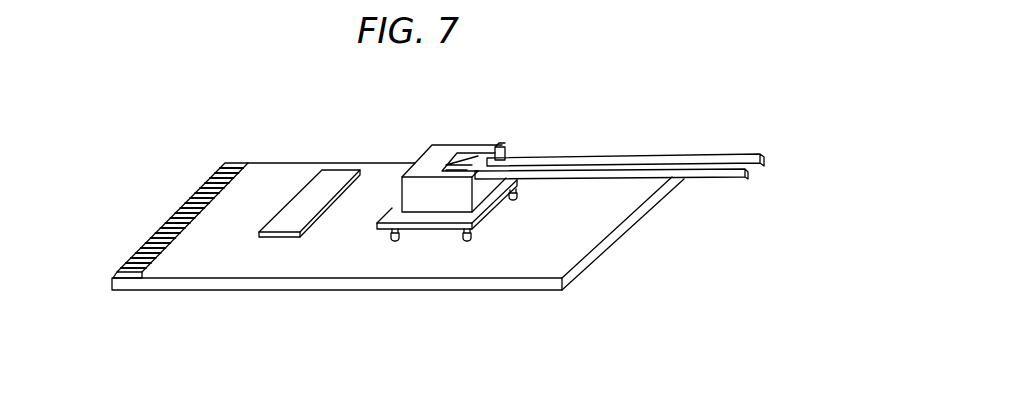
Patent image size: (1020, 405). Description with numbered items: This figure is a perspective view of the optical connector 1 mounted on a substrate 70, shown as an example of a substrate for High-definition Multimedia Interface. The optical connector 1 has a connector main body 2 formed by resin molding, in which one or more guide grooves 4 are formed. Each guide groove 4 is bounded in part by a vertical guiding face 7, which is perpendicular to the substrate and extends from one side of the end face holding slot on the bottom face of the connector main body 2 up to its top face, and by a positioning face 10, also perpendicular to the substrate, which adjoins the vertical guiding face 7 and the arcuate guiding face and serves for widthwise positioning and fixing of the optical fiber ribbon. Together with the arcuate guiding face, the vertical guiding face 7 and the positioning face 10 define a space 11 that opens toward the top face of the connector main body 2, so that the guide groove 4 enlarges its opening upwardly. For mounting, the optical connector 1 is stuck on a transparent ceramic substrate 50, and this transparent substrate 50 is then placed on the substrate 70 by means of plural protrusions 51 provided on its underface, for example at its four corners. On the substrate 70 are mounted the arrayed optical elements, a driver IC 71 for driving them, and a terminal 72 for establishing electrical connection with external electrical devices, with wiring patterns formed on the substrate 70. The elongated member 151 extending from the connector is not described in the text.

The optical connector 1 is at (592, 144).
The connector main body 2 is at (430, 153).
The guide groove 4 is at (505, 150).
The vertical guiding face 7 is at (460, 155).
The positioning face 10 is at (483, 157).
The space 11 is at (472, 155).
The beam 151 is at (736, 157).
The transparent substrate 50 is at (503, 207).
The protrusions 51 is at (399, 241).
The substrate 70 is at (577, 267).
The driver IC 71 is at (318, 176).
The terminal 72 is at (130, 262).